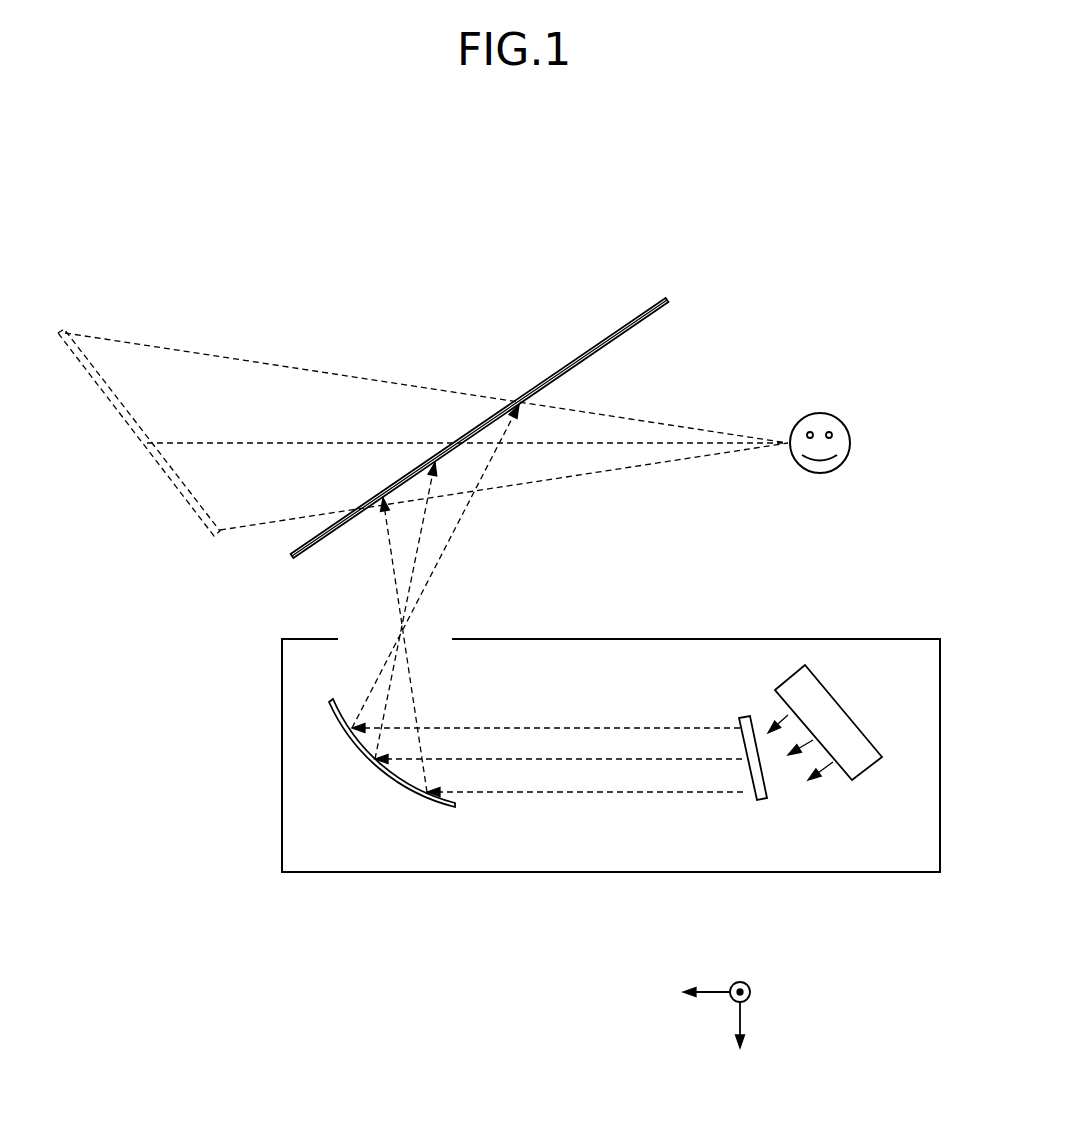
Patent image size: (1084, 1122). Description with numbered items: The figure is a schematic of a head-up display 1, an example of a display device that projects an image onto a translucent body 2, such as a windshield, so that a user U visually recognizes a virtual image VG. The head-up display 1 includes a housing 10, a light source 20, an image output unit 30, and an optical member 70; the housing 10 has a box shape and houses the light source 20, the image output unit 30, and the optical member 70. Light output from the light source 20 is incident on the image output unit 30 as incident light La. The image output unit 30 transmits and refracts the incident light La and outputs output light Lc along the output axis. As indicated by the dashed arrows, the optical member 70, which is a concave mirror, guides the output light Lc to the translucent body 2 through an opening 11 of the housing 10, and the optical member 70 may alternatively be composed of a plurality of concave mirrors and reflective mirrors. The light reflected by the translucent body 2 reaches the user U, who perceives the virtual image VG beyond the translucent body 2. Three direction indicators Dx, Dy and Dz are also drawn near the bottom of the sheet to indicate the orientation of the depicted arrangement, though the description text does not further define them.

The head-up display 1 is at (270, 674).
The translucent body 2 is at (606, 333).
The housing 10 is at (897, 638).
The opening 11 is at (357, 638).
The light source 20 is at (868, 770).
The image output unit 30 is at (765, 805).
The optical member 70 is at (410, 795).
The user U is at (821, 392).
The virtual image VG is at (60, 328).
The incident light La is at (772, 722).
The output light Lc is at (712, 727).
The X direction axis Dx is at (739, 1043).
The Y direction axis Dy is at (758, 993).
The Z direction axis Dz is at (691, 993).